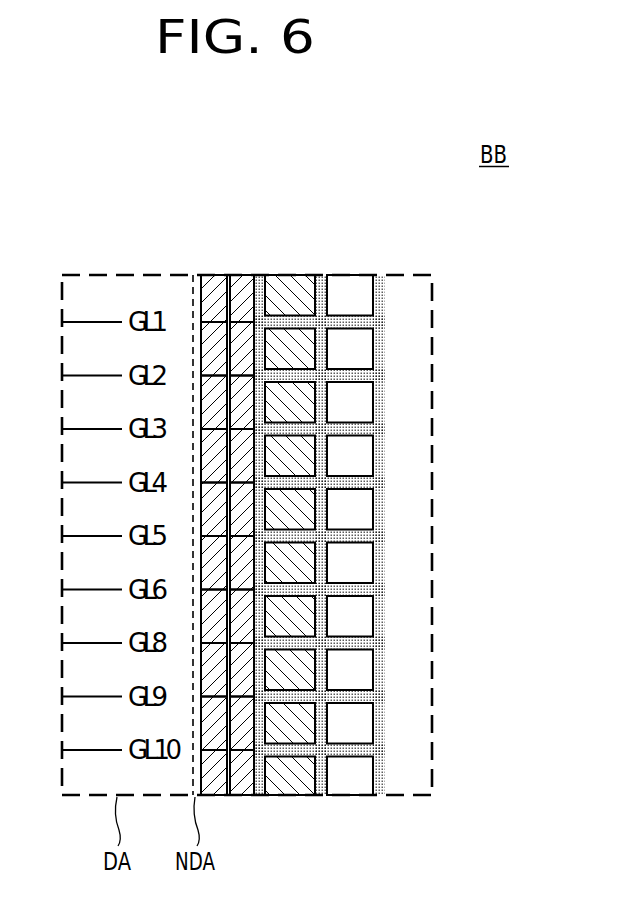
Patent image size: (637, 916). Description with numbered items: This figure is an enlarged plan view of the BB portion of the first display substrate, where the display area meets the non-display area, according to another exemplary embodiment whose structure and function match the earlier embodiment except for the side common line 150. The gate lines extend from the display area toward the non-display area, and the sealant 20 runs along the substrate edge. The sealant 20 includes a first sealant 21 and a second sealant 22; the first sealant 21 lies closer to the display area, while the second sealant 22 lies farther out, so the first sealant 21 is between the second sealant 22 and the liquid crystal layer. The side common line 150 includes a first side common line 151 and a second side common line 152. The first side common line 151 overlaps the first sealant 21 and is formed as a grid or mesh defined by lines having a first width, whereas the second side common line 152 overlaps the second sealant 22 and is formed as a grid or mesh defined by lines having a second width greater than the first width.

The sealant 20 is at (303, 210).
The first sealant 21 is at (213, 285).
The second sealant 22 is at (289, 285).
The side common line 150 is at (400, 876).
The first side common line 151 is at (225, 797).
The second side common line 152 is at (375, 797).